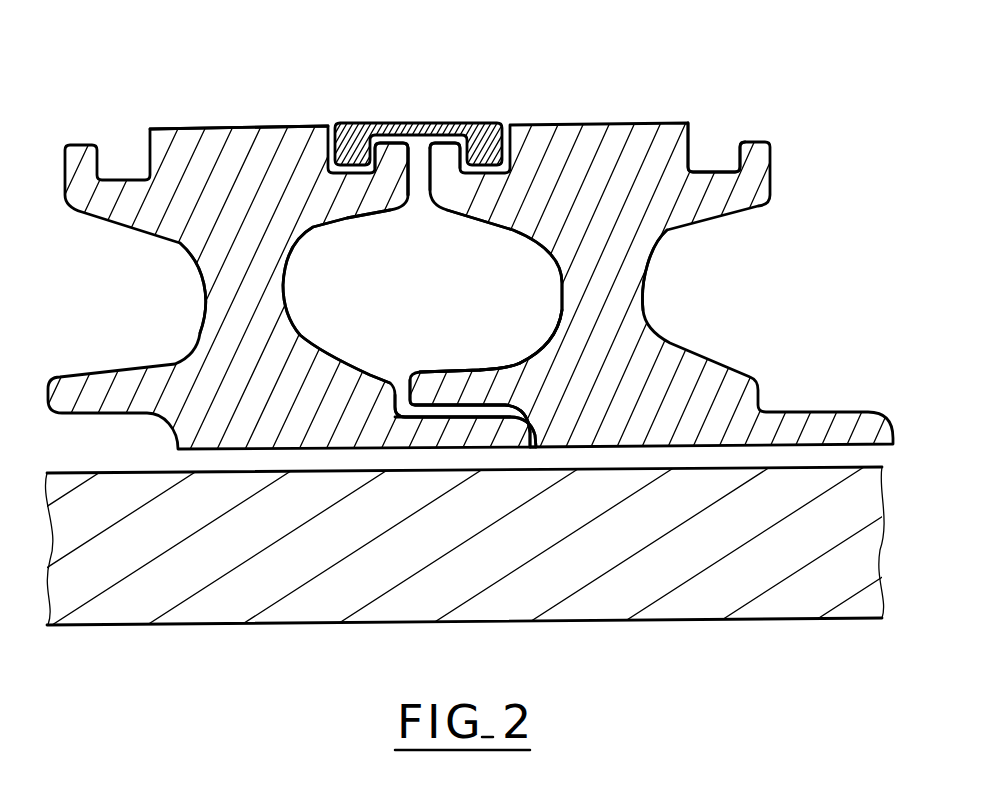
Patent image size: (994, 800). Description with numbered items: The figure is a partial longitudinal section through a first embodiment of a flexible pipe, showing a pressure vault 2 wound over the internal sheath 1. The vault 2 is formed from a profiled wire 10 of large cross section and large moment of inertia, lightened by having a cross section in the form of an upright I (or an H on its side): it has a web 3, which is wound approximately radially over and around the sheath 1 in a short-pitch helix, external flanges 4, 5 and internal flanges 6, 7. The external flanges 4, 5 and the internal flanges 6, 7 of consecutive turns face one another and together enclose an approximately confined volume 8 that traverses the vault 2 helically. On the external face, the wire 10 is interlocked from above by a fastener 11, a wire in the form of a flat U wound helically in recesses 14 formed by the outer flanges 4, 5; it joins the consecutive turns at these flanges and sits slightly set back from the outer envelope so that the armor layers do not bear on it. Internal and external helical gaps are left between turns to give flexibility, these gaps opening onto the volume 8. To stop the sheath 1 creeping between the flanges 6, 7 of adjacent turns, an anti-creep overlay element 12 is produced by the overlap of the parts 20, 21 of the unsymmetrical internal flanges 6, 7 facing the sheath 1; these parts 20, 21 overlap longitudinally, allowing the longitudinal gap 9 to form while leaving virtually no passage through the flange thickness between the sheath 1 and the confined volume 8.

The internal sheath 1 is at (275, 582).
The pressure vault 2 is at (196, 128).
The web 3 is at (223, 304).
The external flange 4 is at (380, 197).
The external flange 5 is at (447, 187).
The internal flange 6 is at (483, 390).
The internal flange 7 is at (425, 432).
The confined volume 8 is at (503, 298).
The longitudinal gap 9 is at (418, 188).
The profiled wire 10 is at (652, 122).
The fastener 11 is at (484, 126).
The overlay element 12 is at (461, 360).
The recess 14 is at (720, 162).
The overlapping part 20 is at (482, 432).
The overlapping part 21 is at (433, 387).